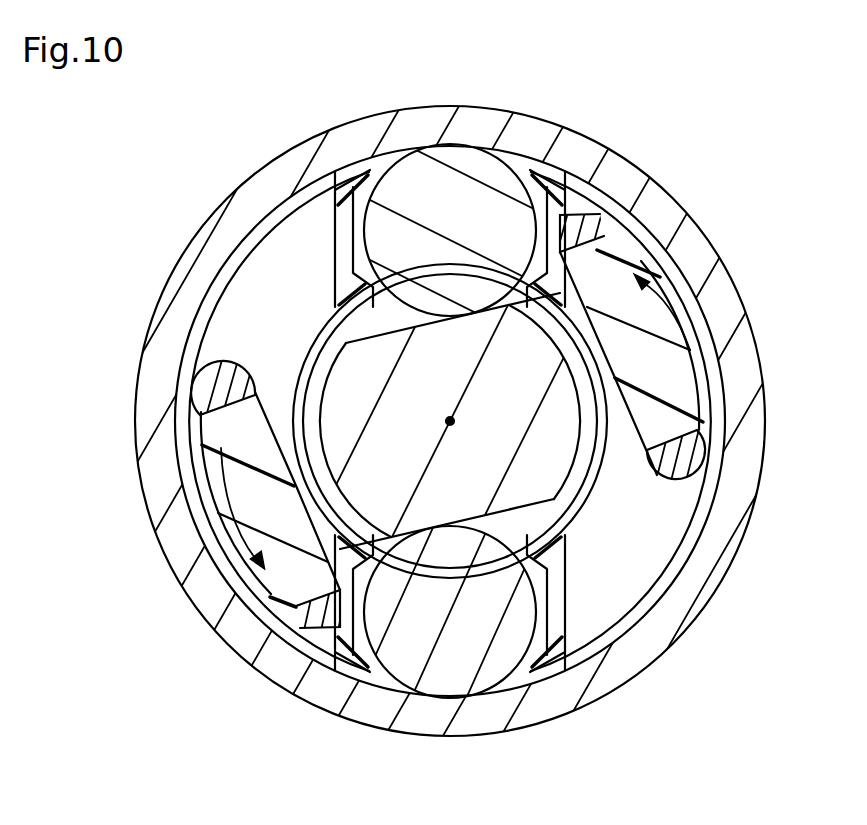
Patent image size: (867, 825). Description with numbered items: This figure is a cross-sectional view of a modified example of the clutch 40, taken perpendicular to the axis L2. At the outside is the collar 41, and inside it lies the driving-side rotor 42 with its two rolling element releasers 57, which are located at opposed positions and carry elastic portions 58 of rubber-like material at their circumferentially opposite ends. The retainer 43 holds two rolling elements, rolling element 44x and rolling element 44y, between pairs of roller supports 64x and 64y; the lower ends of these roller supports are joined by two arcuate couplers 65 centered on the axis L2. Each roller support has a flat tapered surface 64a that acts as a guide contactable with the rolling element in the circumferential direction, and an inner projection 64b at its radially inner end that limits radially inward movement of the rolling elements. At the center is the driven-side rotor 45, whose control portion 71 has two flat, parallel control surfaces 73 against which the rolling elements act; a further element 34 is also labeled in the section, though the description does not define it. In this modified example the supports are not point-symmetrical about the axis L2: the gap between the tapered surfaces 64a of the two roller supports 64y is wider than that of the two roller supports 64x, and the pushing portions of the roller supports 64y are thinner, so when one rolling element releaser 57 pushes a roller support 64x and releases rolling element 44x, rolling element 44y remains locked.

The clutch 40 is at (735, 164).
The collar 41 is at (748, 528).
The driving-side rotor 42 is at (636, 226).
The retainer 43 is at (680, 562).
The rolling element 44x is at (452, 303).
The rolling element 44y is at (463, 542).
The driven-side rotor 45 is at (315, 510).
The shaft sleeve 34 is at (585, 360).
The rolling element releaser 57 is at (663, 310).
The elastic portion 58 is at (600, 228).
The tapered surface 64a is at (527, 200).
The inner projection 64b is at (363, 285).
The roller support 64x is at (343, 236).
The roller support 64y is at (348, 632).
The coupler 65 is at (235, 296).
The control portion 71 is at (325, 415).
The control surface 73 is at (426, 316).
The axis L2 is at (462, 419).